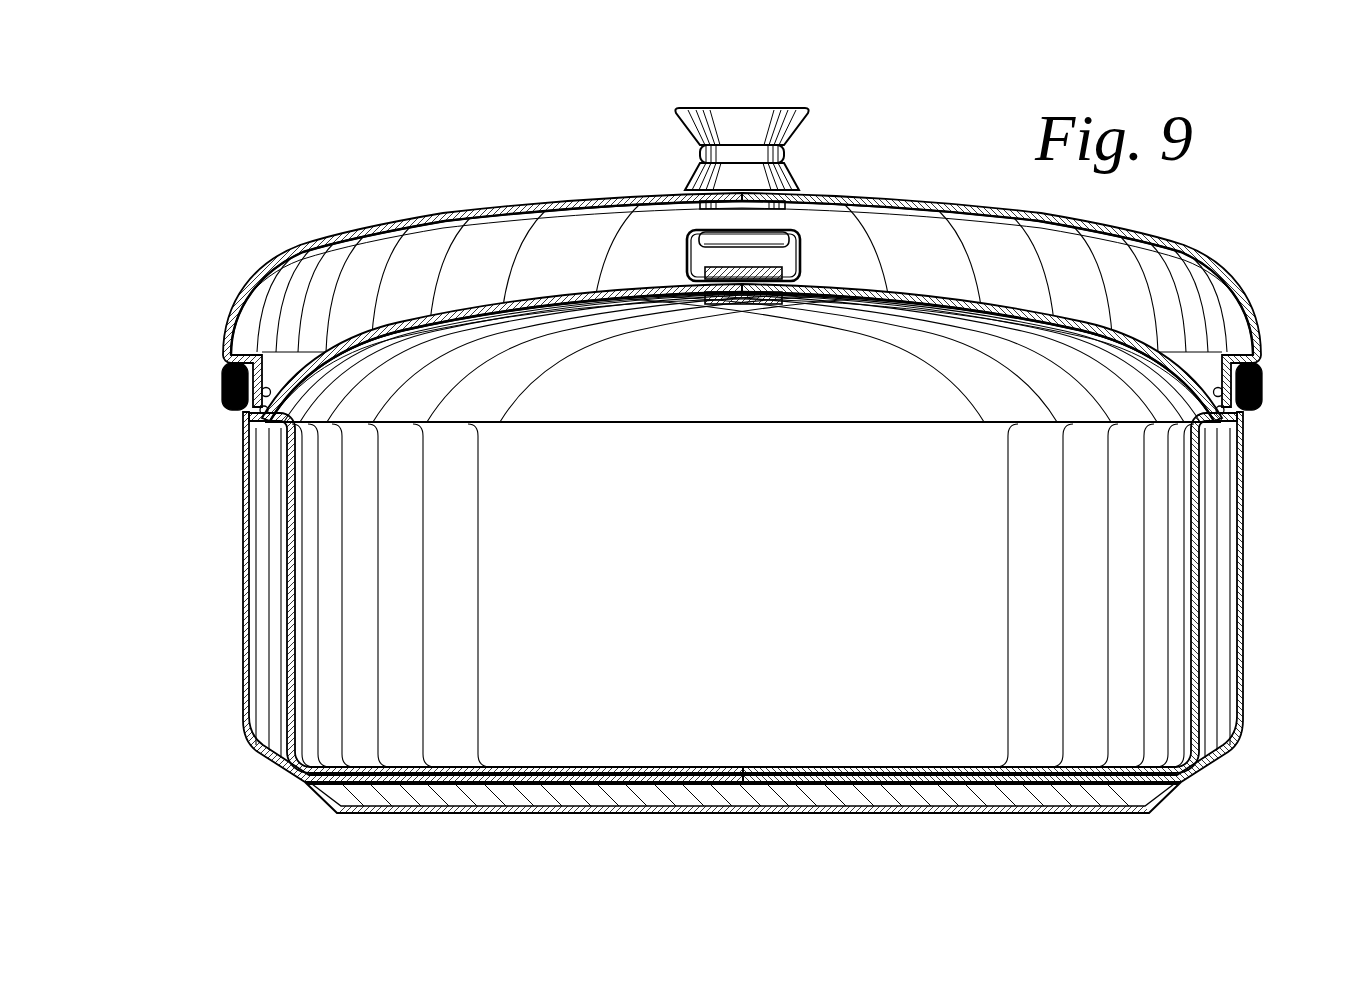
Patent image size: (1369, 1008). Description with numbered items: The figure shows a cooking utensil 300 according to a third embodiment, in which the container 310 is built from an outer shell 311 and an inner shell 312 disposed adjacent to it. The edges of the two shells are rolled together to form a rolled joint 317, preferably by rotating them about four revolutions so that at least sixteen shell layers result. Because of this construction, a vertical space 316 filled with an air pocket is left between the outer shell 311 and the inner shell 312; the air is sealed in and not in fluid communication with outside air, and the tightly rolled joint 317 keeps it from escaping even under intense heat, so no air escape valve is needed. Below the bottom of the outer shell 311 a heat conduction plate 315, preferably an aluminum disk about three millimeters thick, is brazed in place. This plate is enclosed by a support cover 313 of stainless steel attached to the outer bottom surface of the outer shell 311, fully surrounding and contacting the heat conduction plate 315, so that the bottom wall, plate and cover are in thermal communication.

The cooking utensil 300 is at (901, 120).
The container 310 is at (1244, 551).
The outer shell 311 is at (243, 555).
The inner shell 312 is at (288, 485).
The support cover 313 is at (828, 814).
The heat conduction plate 315 is at (992, 794).
The vertical space 316 is at (273, 617).
The rolled joint 317 is at (1265, 384).